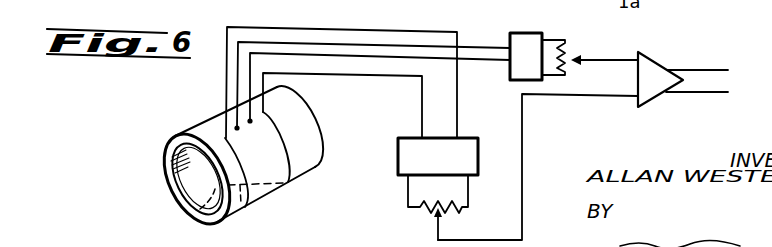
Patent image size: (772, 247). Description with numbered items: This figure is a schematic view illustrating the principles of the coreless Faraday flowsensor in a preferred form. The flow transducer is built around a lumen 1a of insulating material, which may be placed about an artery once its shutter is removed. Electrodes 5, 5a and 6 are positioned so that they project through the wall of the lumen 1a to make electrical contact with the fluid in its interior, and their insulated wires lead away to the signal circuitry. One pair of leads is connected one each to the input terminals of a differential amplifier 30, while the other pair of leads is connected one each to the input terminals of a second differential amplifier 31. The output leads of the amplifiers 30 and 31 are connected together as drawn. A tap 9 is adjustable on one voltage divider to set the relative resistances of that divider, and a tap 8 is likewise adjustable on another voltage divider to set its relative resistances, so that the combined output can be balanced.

The lumen 1a is at (312, 131).
The electrode 5 is at (235, 126).
The electrode 5a is at (248, 121).
The electrode 6 is at (203, 206).
The tap 8 is at (436, 229).
The tap 9 is at (582, 57).
The differential amplifier 30 is at (523, 42).
The differential amplifier 31 is at (438, 156).